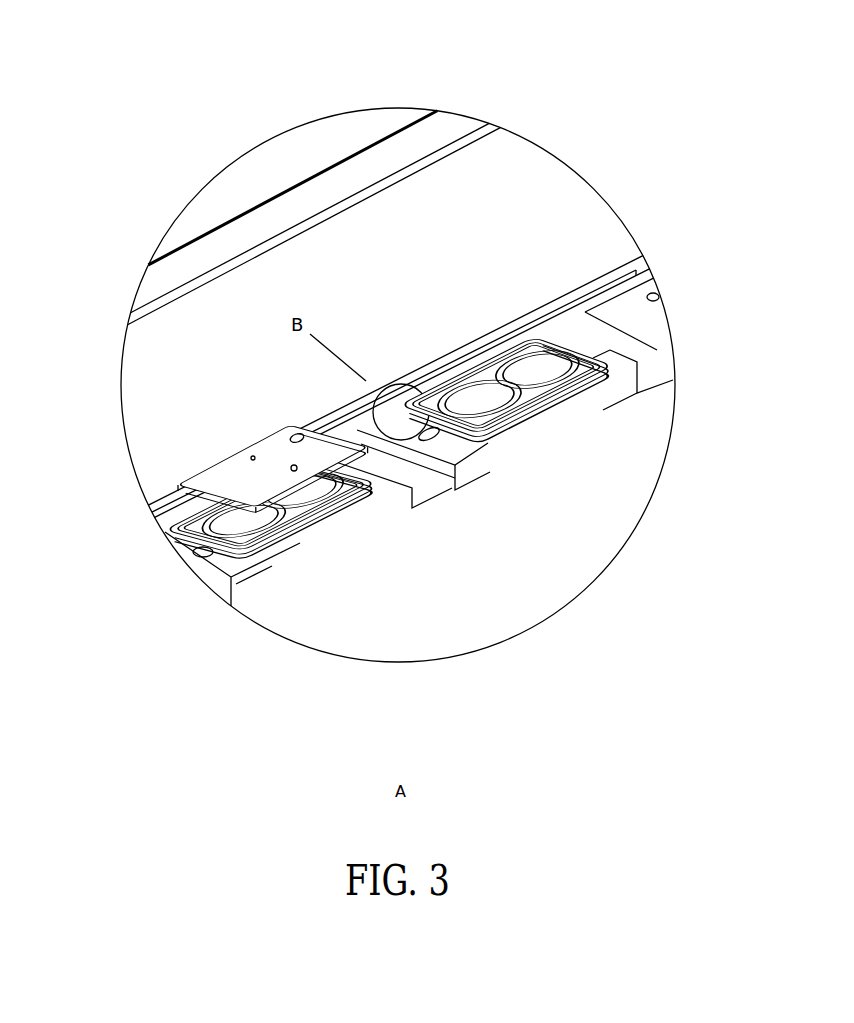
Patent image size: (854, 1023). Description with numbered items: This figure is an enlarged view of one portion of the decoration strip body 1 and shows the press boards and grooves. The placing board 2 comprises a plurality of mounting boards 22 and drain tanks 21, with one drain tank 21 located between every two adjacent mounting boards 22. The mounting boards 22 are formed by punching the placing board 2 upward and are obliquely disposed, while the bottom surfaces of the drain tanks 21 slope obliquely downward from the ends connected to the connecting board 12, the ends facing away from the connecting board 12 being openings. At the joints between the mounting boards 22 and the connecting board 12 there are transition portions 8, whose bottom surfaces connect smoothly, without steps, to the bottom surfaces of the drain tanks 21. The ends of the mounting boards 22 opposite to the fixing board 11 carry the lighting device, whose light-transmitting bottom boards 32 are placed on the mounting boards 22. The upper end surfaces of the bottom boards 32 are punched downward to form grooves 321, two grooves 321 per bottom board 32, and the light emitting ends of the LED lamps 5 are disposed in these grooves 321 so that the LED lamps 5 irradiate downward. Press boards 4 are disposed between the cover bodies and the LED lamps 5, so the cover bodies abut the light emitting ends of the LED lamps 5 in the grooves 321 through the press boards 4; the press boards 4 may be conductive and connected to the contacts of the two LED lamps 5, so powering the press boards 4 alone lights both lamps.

The decoration strip body 1 is at (536, 20).
The fixing board 11 is at (380, 176).
The connecting board 12 is at (410, 241).
The placing board 2 is at (757, 280).
The drain tank 21 is at (640, 347).
The mounting board 22 is at (663, 306).
The transition portion 8 is at (650, 270).
The bottom board 32 is at (533, 418).
The groove 321 is at (550, 381).
The press board 4 is at (220, 481).
The LED lamp 5 is at (208, 512).